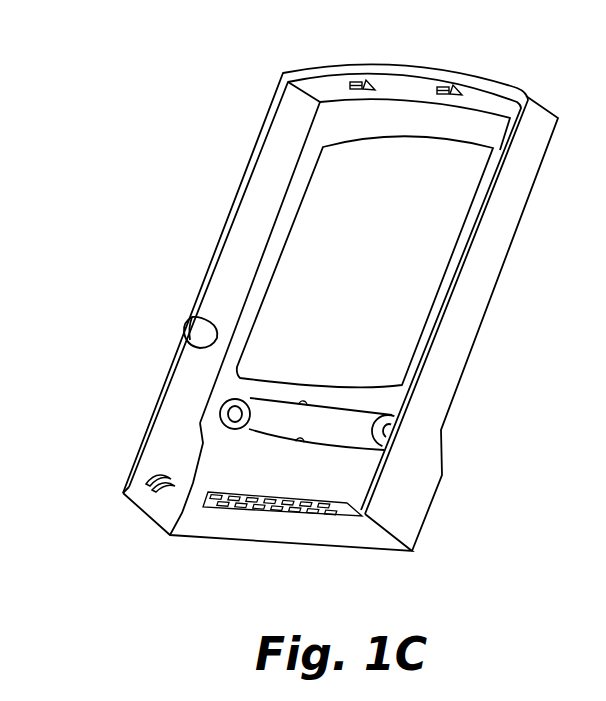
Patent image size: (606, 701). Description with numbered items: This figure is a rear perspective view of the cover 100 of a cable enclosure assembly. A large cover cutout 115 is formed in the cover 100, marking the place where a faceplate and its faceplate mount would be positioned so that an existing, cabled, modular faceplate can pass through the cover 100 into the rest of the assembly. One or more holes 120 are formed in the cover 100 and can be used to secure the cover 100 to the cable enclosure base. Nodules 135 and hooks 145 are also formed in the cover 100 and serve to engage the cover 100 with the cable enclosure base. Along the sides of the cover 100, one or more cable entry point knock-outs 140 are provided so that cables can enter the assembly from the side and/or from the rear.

The cover 100 is at (238, 116).
The cover cutout 115 is at (383, 287).
The holes 120 is at (219, 413).
The nodules 135 is at (145, 482).
The cable entry point knock-outs 140 is at (197, 335).
The hooks 145 is at (456, 90).